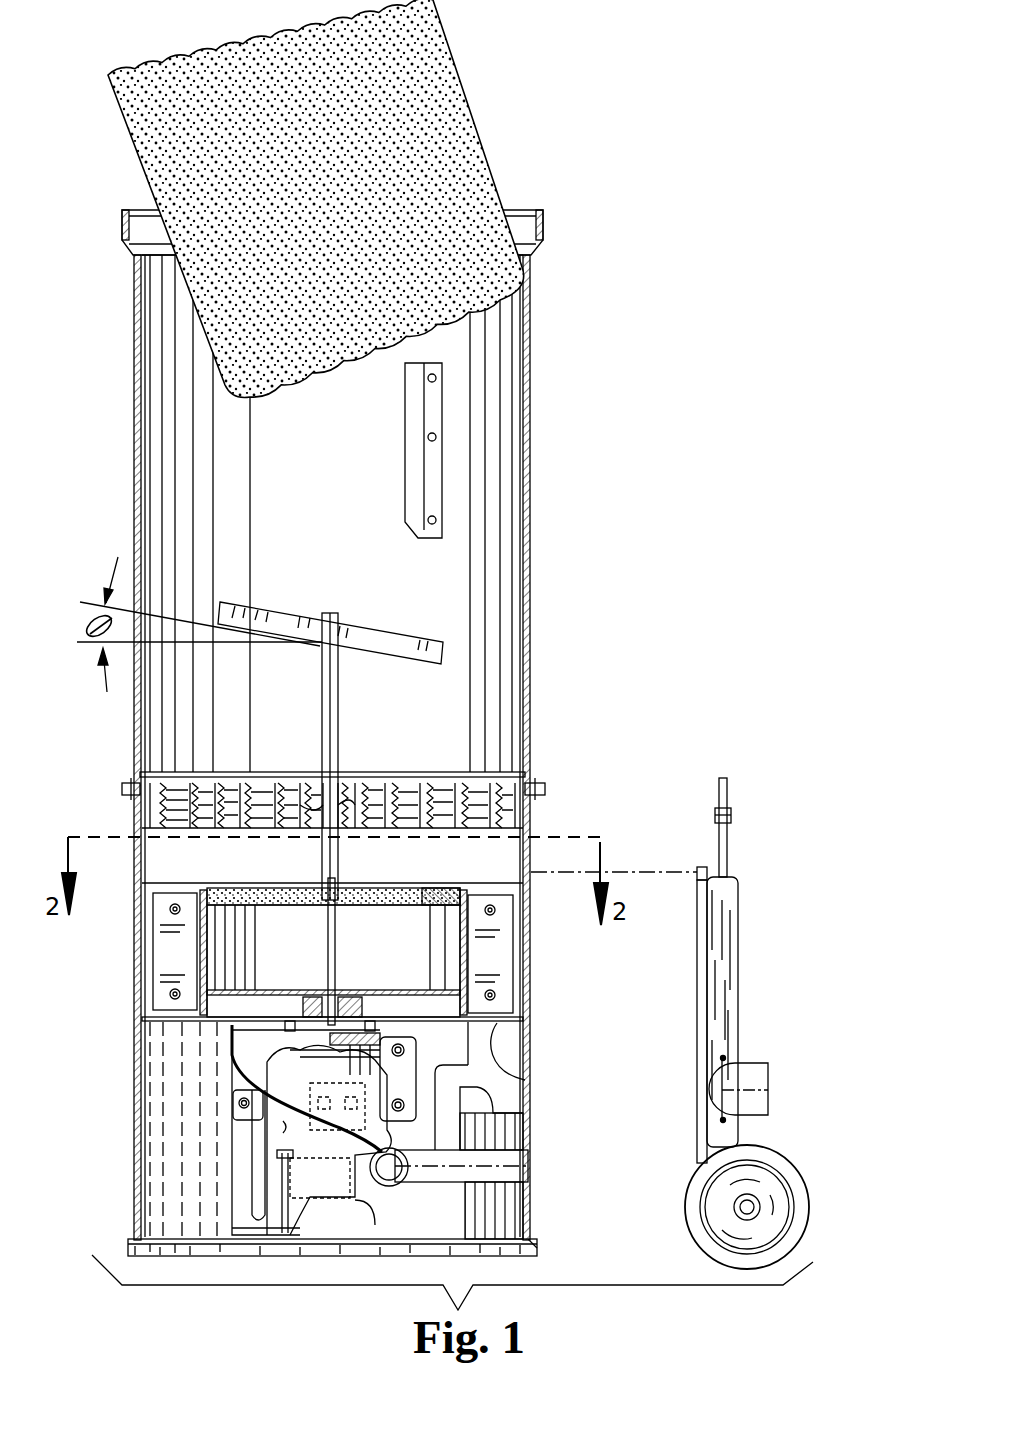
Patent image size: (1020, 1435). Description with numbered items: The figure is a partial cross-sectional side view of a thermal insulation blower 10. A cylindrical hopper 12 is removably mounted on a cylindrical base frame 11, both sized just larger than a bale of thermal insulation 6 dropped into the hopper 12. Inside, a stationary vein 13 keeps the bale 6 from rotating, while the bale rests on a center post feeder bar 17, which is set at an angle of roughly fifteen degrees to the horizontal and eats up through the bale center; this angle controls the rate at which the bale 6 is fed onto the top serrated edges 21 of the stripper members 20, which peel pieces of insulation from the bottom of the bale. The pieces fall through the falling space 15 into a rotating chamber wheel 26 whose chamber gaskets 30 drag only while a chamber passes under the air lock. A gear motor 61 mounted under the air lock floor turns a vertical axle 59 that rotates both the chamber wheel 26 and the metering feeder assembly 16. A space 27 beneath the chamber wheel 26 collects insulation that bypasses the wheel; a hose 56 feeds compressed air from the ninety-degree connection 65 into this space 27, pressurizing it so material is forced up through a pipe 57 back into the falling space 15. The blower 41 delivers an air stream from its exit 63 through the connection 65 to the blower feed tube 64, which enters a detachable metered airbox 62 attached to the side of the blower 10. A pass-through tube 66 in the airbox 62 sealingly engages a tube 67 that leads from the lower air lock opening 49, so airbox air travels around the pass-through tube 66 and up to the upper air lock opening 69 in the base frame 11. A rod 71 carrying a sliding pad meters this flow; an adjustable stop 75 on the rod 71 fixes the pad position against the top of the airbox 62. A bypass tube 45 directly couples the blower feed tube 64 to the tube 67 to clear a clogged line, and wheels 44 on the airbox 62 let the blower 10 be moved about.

The bale of thermal insulation 6 is at (125, 125).
The thermal insulation blower 10 is at (608, 351).
The base frame 11 is at (525, 822).
The hopper 12 is at (133, 452).
The stationary vein 13 is at (388, 478).
The falling space 15 is at (175, 856).
The metering feeder assembly 16 is at (490, 778).
The center post feeder bar 17 is at (228, 606).
The stripper members 20 is at (160, 822).
The top serrated edges 21 is at (232, 786).
The chamber wheel 26 is at (178, 996).
The space 27 is at (440, 1003).
The chamber gaskets 30 is at (143, 966).
The blower 41 is at (370, 1208).
The wheels 44 is at (685, 1190).
The bypass tube 45 is at (443, 1084).
The lower air lock opening 49 is at (510, 1060).
The hose 56 is at (240, 1082).
The pipe 57 is at (276, 892).
The vertical axle 59 is at (340, 964).
The gear motor 61 is at (232, 1070).
The metered airbox 62 is at (738, 968).
The exit 63 is at (390, 1186).
The blower feed tube 64 is at (470, 1186).
The 90° connection 65 is at (420, 1184).
The pass-through tube 66 is at (760, 1064).
The tube 67 is at (520, 1116).
The upper air lock opening 69 is at (542, 922).
The rod 71 is at (727, 846).
The adjustable stop 75 is at (731, 816).